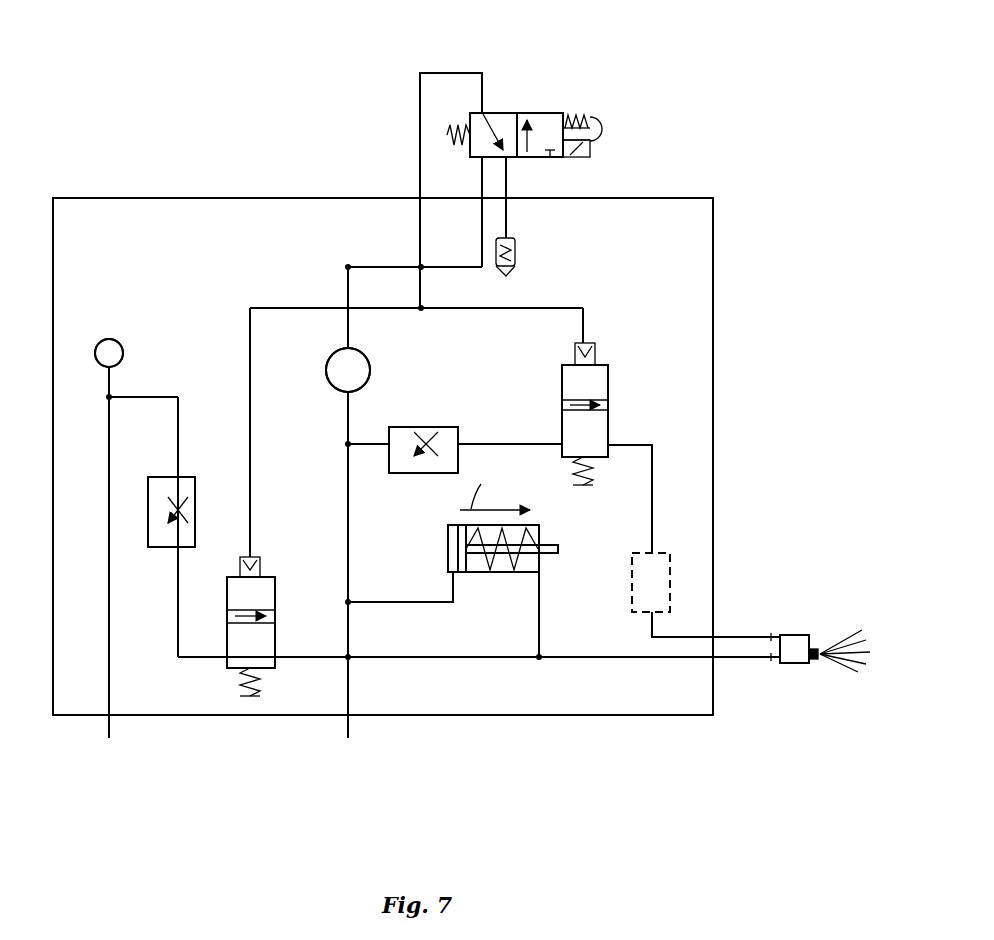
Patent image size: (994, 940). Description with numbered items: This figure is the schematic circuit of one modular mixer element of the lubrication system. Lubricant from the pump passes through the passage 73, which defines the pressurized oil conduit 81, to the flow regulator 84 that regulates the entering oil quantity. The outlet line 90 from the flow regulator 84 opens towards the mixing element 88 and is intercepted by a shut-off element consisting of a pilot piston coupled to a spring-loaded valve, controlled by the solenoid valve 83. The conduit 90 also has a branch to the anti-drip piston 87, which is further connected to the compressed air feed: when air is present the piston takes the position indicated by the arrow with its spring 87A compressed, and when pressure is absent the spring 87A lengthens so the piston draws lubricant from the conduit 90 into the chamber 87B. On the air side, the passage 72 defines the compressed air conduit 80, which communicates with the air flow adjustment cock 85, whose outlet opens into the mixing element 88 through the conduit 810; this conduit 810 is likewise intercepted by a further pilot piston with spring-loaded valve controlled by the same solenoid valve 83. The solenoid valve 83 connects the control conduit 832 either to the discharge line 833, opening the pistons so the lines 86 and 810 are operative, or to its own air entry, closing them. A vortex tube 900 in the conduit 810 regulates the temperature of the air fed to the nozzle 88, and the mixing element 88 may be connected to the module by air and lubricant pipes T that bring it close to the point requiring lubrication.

The conduit 832 is at (483, 97).
The solenoid valve 83 is at (537, 102).
The discharge line 833 is at (507, 186).
The passage 73 is at (124, 350).
The pressurized oil conduit 81 is at (98, 338).
The flow regulator 84 is at (150, 552).
The outlet line 90 is at (175, 628).
The line 86 is at (403, 662).
The passage 72 is at (372, 370).
The compressed air conduit 80 is at (330, 379).
The air flow adjustment cock 85 is at (402, 480).
The conduit 810 is at (513, 442).
The anti-drip piston 87 is at (502, 578).
The spring 87A is at (545, 533).
The chamber 87B is at (526, 565).
The vortex tube 900 is at (671, 581).
The air and lubricant pipes T is at (752, 657).
The mixing element 88 is at (820, 666).